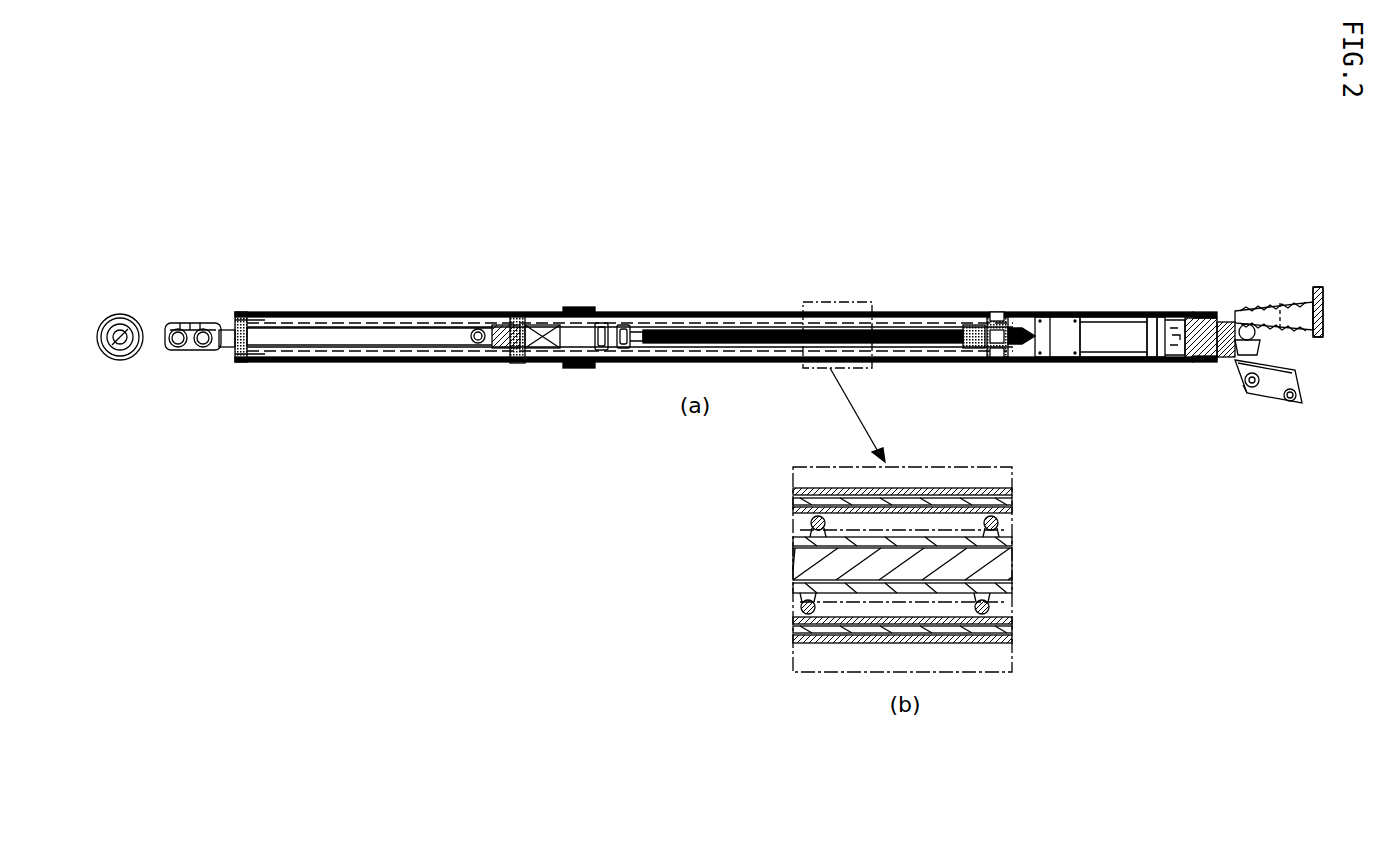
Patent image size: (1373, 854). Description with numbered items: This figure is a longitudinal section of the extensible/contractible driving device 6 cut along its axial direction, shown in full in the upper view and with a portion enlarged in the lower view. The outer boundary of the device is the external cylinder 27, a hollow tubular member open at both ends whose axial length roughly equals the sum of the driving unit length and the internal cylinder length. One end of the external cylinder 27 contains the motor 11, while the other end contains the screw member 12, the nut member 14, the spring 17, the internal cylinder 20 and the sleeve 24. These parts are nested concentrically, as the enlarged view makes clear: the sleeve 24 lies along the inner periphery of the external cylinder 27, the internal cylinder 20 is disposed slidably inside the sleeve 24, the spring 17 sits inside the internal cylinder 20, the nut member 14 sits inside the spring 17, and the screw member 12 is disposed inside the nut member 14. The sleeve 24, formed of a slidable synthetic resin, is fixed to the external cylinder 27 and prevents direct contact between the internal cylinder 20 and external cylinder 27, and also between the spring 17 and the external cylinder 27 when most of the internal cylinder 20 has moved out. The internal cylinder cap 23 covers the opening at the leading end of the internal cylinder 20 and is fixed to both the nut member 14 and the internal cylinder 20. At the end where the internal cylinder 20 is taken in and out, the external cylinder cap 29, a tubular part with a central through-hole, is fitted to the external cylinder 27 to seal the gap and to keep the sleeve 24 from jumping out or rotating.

The extensible/contractible driving device 6 is at (687, 253).
The motor 11 is at (1113, 358).
The screw member 12 is at (982, 328).
The nut member 14 is at (1012, 542).
The spring 17 is at (815, 522).
The internal cylinder 20 is at (795, 510).
The internal cylinder cap 23 is at (611, 364).
The sleeve 24 is at (1012, 502).
The external cylinder 27 is at (985, 492).
The external cylinder cap 29 is at (514, 364).